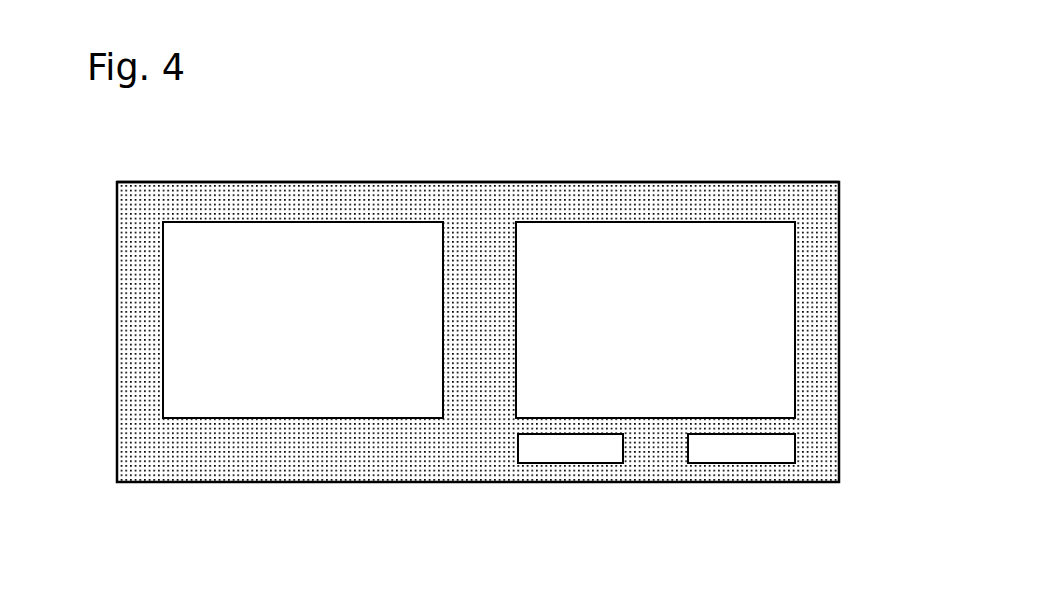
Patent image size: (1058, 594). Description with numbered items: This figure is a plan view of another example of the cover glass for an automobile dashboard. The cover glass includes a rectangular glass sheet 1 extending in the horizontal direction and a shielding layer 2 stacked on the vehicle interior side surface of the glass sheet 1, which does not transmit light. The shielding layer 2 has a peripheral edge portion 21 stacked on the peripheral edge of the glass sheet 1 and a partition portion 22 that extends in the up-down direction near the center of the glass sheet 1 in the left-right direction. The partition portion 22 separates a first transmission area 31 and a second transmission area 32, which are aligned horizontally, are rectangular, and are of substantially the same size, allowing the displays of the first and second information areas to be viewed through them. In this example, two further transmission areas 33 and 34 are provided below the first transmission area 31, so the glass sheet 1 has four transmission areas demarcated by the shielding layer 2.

The glass sheet 1 is at (110, 315).
The shielding layer 2 is at (838, 338).
The peripheral edge portion 21 is at (572, 198).
The partition portion 22 is at (492, 348).
The first transmission area 31 is at (675, 325).
The second transmission area 32 is at (325, 325).
The transmission area 33 is at (748, 457).
The transmission area 34 is at (583, 457).